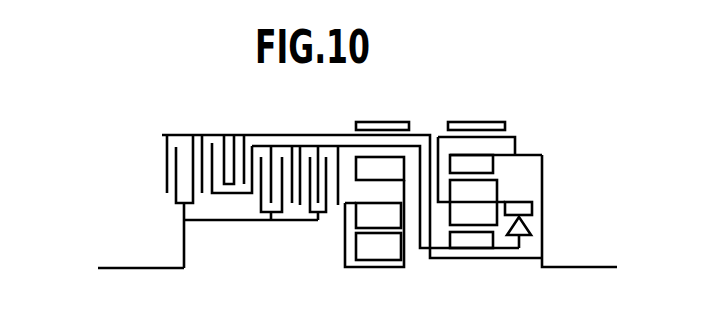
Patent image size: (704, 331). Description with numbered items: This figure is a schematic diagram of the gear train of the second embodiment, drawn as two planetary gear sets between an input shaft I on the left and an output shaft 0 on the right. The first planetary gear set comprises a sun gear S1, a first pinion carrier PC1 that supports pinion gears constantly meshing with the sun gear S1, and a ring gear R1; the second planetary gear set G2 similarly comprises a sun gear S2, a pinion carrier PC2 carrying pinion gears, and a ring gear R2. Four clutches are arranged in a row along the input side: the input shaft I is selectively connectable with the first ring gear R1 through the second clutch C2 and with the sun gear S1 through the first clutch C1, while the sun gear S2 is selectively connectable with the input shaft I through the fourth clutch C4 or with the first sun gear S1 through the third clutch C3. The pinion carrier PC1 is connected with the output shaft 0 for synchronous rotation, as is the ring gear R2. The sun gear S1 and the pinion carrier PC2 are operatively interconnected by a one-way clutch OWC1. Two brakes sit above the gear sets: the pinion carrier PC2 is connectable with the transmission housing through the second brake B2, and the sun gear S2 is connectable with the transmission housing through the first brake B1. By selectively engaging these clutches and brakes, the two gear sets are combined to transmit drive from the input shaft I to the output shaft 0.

The input shaft I is at (113, 268).
The fourth clutch C4 is at (174, 129).
The third clutch C3 is at (212, 128).
The first clutch C1 is at (266, 138).
The second clutch C2 is at (312, 143).
The first brake B1 is at (380, 122).
The second brake B2 is at (472, 122).
The second planetary gear set G2 is at (481, 239).
The ring gear R1 is at (390, 168).
The first pinion carrier PC1 is at (377, 198).
The sun gear S1 is at (362, 248).
The ring gear R2 is at (494, 163).
The pinion carrier PC2 is at (512, 202).
The sun gear S2 is at (523, 234).
The one-way clutch OWC1 is at (522, 233).
The output shaft 0 is at (598, 267).